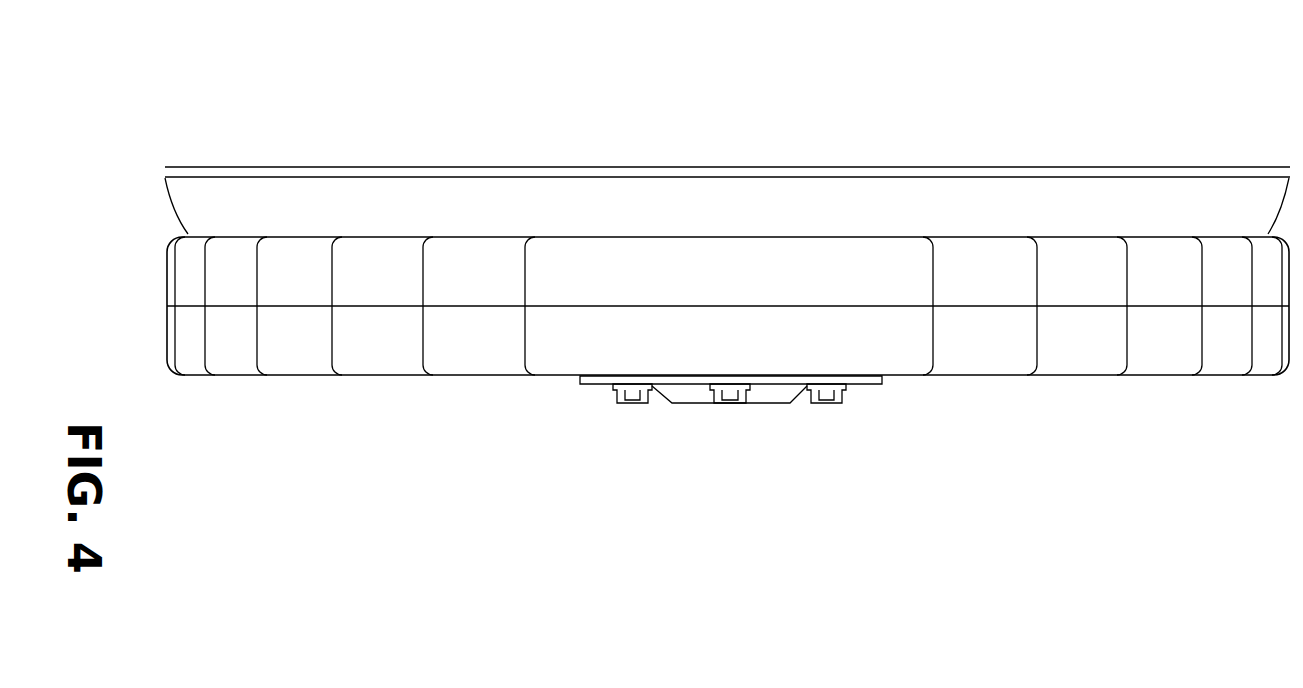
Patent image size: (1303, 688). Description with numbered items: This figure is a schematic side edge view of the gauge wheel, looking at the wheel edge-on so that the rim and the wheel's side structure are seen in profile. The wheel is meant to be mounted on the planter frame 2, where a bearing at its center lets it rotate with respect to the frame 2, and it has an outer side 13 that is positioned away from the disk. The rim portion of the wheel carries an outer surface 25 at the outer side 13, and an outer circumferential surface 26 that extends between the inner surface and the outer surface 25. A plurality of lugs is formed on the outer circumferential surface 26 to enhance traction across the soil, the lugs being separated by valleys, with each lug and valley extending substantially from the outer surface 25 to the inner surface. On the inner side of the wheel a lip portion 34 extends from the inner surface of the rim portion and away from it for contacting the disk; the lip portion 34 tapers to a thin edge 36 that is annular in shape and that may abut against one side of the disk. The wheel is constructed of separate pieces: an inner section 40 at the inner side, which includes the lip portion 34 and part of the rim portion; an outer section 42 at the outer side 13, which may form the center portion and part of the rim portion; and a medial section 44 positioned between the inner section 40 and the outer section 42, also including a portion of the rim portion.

The frame 2 is at (478, 145).
The outer side 13 is at (947, 427).
The outer surface 25 is at (1072, 237).
The outer circumferential surface 26 is at (1057, 423).
The lip portion 34 is at (647, 200).
The thin edge 36 is at (700, 168).
The inner section 40 is at (822, 195).
The outer section 42 is at (563, 432).
The medial section 44 is at (885, 443).